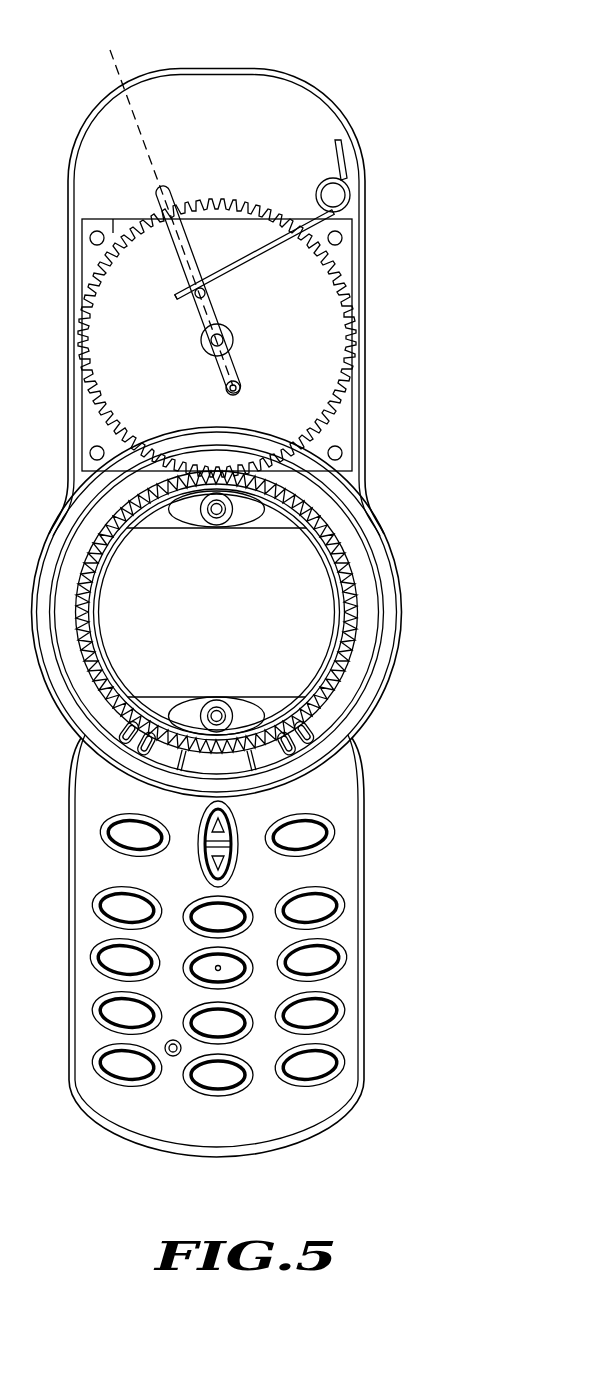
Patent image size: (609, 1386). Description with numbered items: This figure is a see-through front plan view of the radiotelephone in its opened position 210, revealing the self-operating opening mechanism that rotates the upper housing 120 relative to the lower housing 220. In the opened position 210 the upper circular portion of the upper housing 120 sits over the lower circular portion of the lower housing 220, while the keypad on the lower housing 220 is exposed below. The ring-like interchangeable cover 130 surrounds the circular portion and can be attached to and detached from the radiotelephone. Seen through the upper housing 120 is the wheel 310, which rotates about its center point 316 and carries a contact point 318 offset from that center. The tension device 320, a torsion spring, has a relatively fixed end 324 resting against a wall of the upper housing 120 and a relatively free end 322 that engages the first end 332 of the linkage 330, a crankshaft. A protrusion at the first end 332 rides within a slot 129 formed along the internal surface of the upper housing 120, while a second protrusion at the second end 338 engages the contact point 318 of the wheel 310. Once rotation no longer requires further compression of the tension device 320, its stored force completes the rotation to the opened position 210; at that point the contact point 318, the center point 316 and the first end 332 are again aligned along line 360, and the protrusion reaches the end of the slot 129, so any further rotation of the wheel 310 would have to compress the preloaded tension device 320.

The upper housing 120 is at (67, 455).
The slot 129 is at (172, 228).
The interchangeable cover 130 is at (372, 645).
The opened position 210 is at (402, 271).
The lower housing 220 is at (365, 941).
The wheel 310 is at (100, 372).
The center point 316 is at (213, 354).
The contact point 318 is at (217, 388).
The tension device 320 is at (353, 192).
The relatively free end 322 is at (233, 262).
The relatively fixed end 324 is at (343, 163).
The linkage 330 is at (240, 371).
The first end 332 is at (183, 291).
The second end 338 is at (243, 388).
The line 360 is at (112, 50).